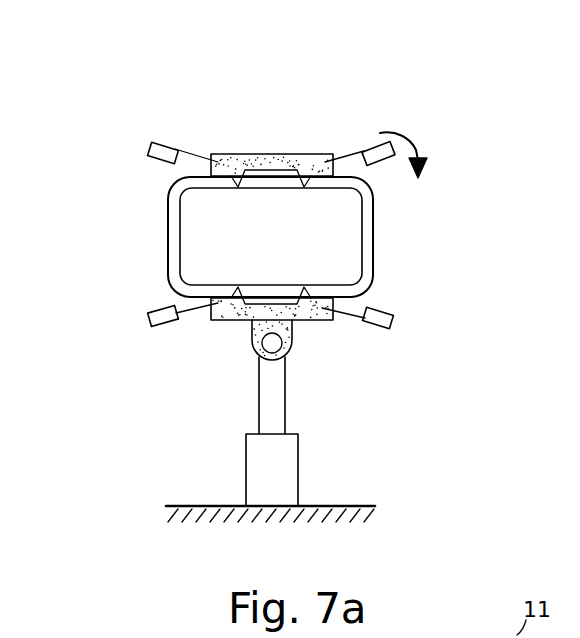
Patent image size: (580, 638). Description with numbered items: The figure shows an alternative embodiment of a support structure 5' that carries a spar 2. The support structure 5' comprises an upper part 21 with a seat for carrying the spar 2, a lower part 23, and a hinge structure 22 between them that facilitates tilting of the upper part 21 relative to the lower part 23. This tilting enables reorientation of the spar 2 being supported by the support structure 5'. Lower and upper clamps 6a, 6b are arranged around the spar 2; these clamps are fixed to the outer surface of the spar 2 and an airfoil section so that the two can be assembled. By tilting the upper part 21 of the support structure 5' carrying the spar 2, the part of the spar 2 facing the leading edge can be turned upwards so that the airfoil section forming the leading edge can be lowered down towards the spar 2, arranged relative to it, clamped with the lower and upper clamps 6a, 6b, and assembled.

The spar 2 is at (170, 245).
The lower clamp 6a is at (380, 314).
The upper clamp 6b is at (160, 152).
The upper part 21 is at (266, 319).
The hinge structure 22 is at (265, 358).
The lower part 23 is at (267, 457).
The support structure 5' is at (354, 327).